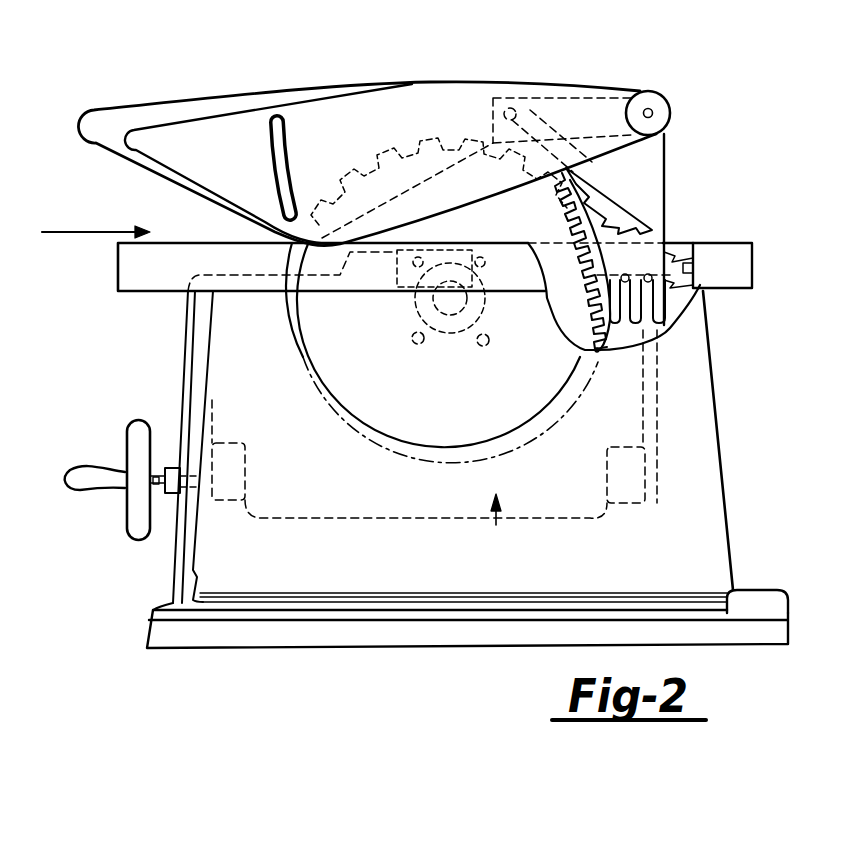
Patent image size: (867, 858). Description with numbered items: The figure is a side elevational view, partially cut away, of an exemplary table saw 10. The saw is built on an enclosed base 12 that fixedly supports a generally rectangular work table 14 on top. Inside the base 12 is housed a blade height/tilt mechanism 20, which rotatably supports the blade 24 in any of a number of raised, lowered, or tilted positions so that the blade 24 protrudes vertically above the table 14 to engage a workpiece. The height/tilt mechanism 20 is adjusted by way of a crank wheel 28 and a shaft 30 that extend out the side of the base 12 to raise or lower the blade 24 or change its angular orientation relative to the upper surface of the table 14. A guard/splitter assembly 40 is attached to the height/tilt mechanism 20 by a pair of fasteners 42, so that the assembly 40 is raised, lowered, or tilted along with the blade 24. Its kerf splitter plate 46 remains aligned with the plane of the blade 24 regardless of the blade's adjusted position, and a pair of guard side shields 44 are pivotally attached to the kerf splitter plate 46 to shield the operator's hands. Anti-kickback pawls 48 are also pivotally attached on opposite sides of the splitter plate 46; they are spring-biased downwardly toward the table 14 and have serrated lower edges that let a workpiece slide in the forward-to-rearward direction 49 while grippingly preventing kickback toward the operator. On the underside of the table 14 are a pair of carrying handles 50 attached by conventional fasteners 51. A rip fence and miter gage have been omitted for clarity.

The table saw 10 is at (158, 86).
The enclosed base 12 is at (697, 440).
The work table 14 is at (724, 243).
The blade height/tilt mechanism 20 is at (497, 523).
The blade 24 is at (563, 327).
The crank wheel 28 is at (130, 502).
The shaft 30 is at (152, 480).
The guard/splitter assembly 40 is at (421, 78).
The fasteners 42 is at (667, 283).
The guard side shields 44 is at (186, 118).
The kerf splitter plate 46 is at (653, 180).
The anti-kickback pawls 48 is at (643, 180).
The forward-to-rearward direction 49 is at (98, 232).
The carrying handles 50 is at (400, 295).
The fasteners 51 is at (372, 292).